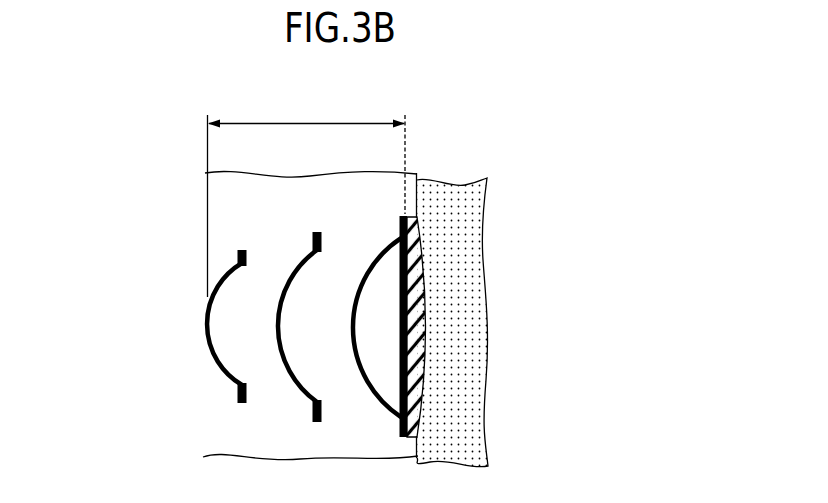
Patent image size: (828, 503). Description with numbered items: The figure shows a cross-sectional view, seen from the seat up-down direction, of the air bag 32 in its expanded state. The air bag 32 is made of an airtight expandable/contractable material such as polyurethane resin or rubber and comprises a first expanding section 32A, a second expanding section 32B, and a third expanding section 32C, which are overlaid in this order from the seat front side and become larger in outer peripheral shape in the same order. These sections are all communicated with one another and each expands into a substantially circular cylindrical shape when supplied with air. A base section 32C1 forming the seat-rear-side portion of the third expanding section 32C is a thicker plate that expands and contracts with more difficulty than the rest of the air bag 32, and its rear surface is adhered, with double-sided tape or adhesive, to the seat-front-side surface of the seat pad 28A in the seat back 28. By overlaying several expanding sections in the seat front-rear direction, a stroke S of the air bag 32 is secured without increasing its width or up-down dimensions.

The stroke S is at (298, 122).
The air bag 32 is at (175, 369).
The first expanding section 32A is at (207, 333).
The second expanding section 32B is at (288, 275).
The third expanding section 32C is at (360, 255).
The base section 32C1 is at (426, 257).
The seat pad 28A is at (463, 222).
The seat back 28 is at (542, 320).